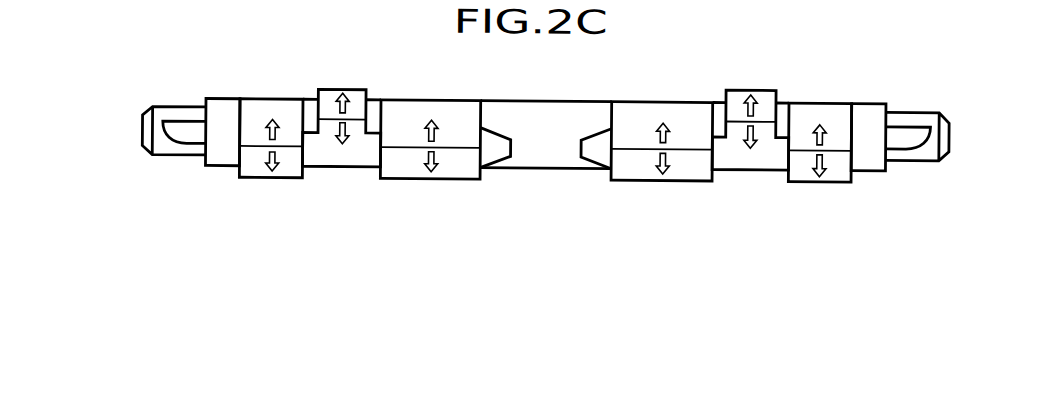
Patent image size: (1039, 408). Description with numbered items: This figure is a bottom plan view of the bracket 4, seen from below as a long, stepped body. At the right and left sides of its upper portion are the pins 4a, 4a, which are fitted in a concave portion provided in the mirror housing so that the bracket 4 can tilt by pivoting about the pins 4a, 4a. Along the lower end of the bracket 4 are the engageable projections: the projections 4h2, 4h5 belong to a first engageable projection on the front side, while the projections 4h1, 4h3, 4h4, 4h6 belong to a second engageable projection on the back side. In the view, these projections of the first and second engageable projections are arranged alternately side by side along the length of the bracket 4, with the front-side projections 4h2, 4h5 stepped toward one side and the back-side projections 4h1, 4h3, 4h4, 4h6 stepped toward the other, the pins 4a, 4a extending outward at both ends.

The bracket 4 is at (548, 137).
The pin 4a is at (147, 132).
The projection of second engageable projection 4h1 is at (256, 164).
The projection of first engageable projection 4h2 is at (329, 102).
The projection of second engageable projection 4h3 is at (406, 164).
The projection of second engageable projection 4h4 is at (688, 163).
The projection of first engageable projection 4h5 is at (765, 101).
The projection of second engageable projection 4h6 is at (839, 163).